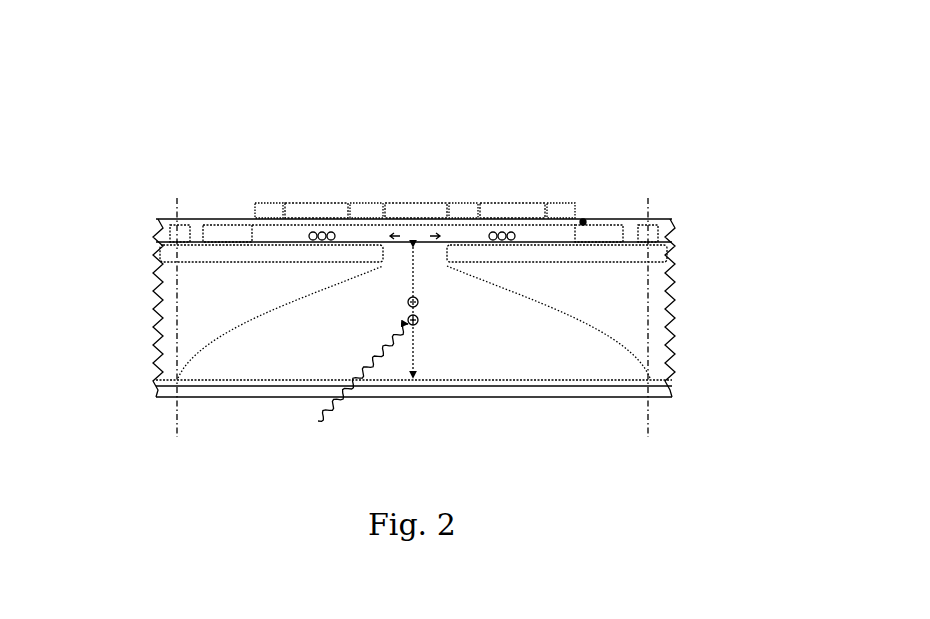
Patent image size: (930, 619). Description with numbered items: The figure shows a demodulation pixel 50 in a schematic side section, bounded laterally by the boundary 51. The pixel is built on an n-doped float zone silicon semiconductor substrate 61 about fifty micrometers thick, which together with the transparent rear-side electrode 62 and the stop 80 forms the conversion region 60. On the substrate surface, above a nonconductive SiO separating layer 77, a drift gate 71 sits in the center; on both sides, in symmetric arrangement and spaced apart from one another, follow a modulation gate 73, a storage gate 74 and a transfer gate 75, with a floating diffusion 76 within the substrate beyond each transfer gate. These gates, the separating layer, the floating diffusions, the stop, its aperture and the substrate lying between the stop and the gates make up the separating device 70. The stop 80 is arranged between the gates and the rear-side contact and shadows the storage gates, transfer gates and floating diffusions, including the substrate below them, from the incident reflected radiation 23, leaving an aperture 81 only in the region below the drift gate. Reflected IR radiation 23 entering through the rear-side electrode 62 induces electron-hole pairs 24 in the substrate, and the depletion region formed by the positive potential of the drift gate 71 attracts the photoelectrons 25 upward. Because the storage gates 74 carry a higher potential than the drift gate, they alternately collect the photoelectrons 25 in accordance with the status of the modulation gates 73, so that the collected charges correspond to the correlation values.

The demodulation pixel 50 is at (357, 90).
The separating device 70 is at (335, 165).
The drift gate 71 is at (432, 202).
The modulation gate 73 is at (369, 202).
The storage gate 74 is at (318, 202).
The transfer gate 75 is at (268, 202).
The floating diffusion 76 is at (226, 220).
The separating layer 77 is at (583, 220).
The stop 80 is at (168, 250).
The aperture 81 is at (397, 202).
The photoelectrons 25 is at (513, 240).
The electron-hole pairs 24 is at (420, 316).
The reflected radiation 23 is at (318, 420).
The conversion region 60 is at (150, 323).
The semiconductor substrate 61 is at (345, 312).
The rear-side electrode 62 is at (165, 386).
The boundary 51 is at (175, 410).